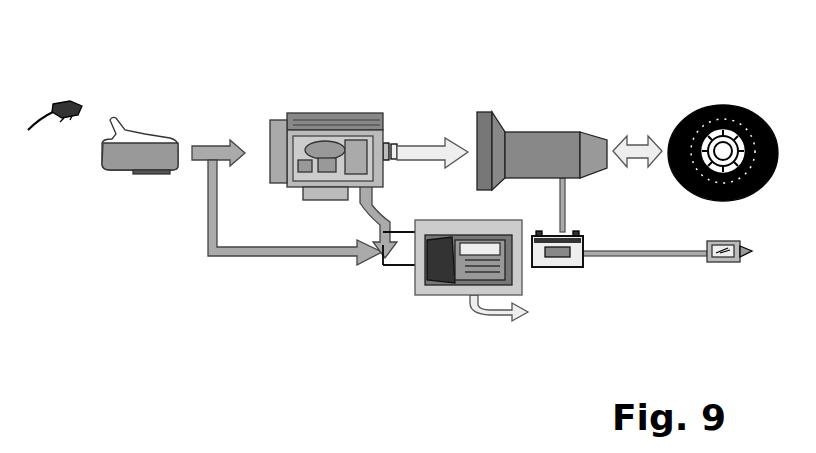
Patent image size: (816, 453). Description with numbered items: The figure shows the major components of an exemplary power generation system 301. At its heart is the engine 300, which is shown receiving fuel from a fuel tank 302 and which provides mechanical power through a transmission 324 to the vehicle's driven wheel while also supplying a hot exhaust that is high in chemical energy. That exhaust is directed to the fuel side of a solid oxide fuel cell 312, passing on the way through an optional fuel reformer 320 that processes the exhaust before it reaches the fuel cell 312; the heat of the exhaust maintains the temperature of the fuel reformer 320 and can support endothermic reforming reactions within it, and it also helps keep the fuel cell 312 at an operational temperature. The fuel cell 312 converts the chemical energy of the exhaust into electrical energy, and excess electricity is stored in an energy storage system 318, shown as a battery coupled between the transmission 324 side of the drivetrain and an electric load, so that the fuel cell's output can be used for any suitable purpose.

The power generation system 301 is at (193, 46).
The fuel tank 302 is at (147, 130).
The engine 300 is at (340, 112).
The transmission 324 is at (567, 130).
The fuel reformer 320 is at (403, 267).
The solid oxide fuel cell 312 is at (462, 293).
The energy storage system 318 is at (557, 270).